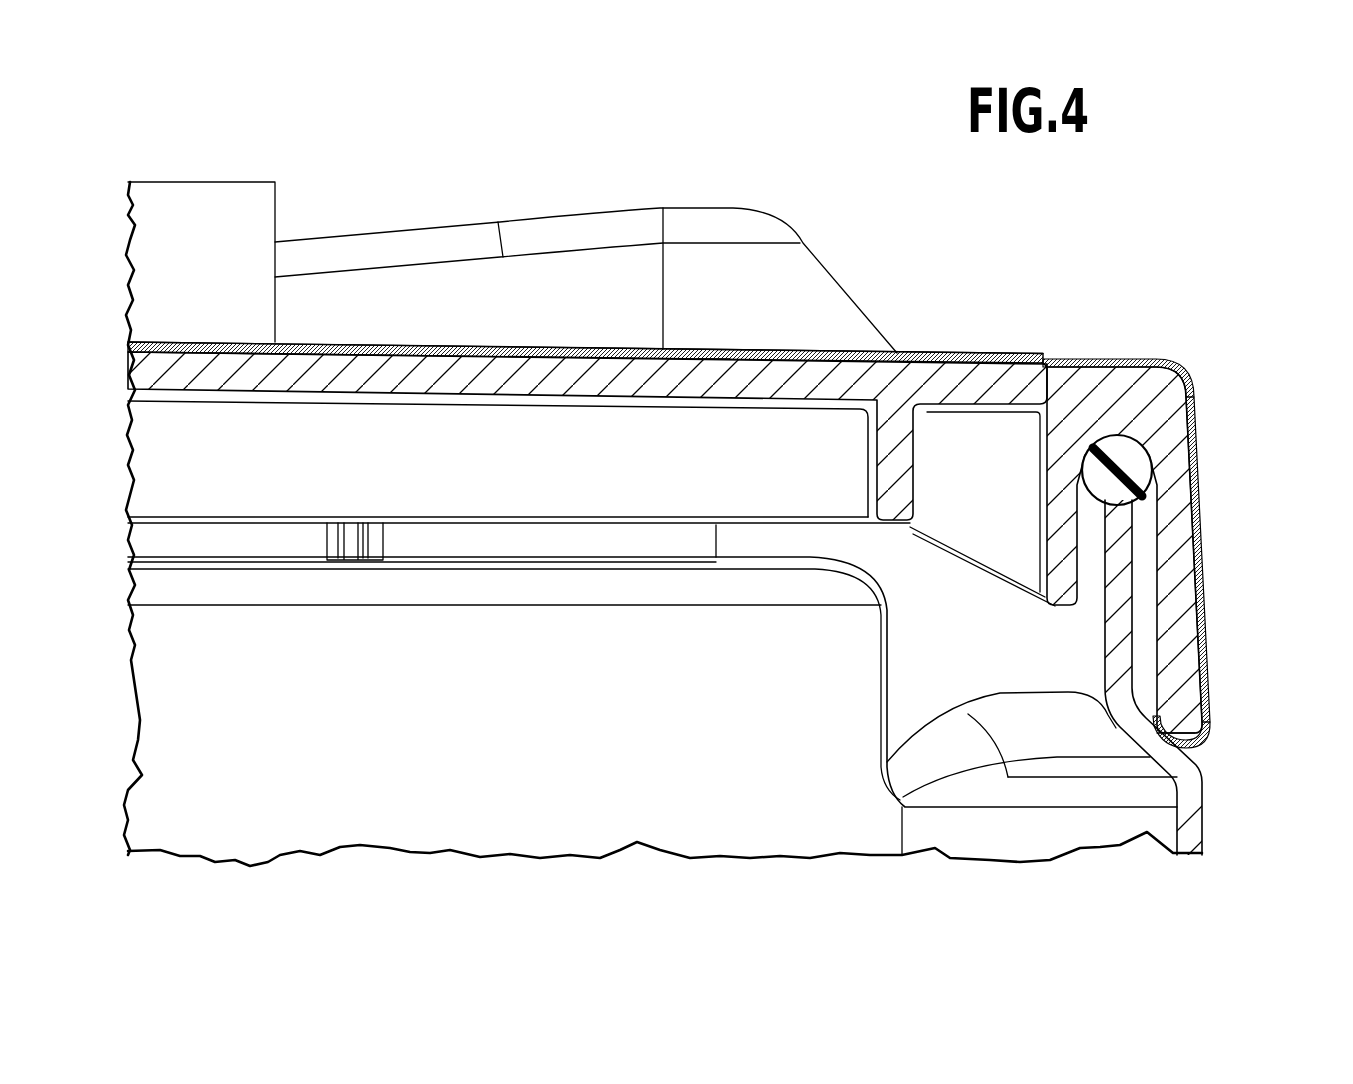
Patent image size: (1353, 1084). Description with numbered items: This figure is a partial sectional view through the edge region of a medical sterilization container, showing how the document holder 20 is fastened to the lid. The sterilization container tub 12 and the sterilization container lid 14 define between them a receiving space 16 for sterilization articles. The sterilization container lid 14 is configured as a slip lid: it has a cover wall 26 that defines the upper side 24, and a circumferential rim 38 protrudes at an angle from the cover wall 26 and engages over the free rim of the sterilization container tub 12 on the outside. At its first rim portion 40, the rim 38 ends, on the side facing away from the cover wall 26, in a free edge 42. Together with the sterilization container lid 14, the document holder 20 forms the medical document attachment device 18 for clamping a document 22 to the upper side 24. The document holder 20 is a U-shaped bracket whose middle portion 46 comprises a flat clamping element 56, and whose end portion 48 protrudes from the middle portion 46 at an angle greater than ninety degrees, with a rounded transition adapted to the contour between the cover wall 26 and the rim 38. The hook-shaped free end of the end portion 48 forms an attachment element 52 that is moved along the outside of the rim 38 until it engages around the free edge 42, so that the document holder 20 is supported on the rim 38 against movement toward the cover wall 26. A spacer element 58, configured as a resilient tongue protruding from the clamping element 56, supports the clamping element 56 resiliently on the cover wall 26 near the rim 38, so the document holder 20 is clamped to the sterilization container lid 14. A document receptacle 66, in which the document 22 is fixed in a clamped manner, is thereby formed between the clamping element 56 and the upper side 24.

The sterilization container tub 12 is at (1190, 830).
The sterilization container lid 14 is at (398, 188).
The receiving space 16 is at (748, 823).
The medical document attachment device 18 is at (1166, 318).
The document holder 20 is at (960, 318).
The document 22 is at (199, 200).
The upper side 24 is at (572, 357).
The cover wall 26 is at (553, 380).
The circumferential rim 38 is at (1208, 527).
The first rim portion 40 is at (1178, 627).
The free edge 42 is at (1186, 725).
The middle portion 46 is at (485, 346).
The end portion 48 is at (1207, 575).
The attachment element 52 is at (1198, 748).
The clamping element 56 is at (620, 348).
The spacer element 58 is at (1053, 362).
The document receptacle 66 is at (714, 338).